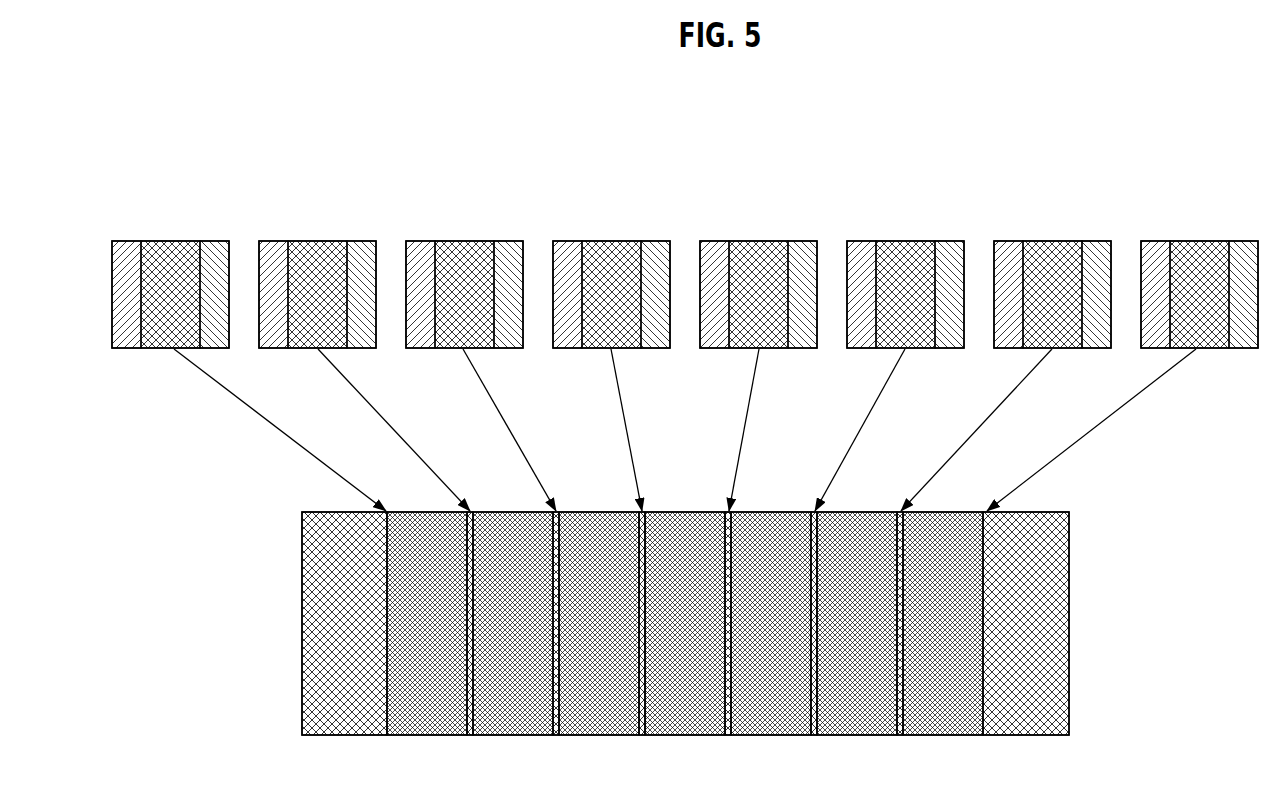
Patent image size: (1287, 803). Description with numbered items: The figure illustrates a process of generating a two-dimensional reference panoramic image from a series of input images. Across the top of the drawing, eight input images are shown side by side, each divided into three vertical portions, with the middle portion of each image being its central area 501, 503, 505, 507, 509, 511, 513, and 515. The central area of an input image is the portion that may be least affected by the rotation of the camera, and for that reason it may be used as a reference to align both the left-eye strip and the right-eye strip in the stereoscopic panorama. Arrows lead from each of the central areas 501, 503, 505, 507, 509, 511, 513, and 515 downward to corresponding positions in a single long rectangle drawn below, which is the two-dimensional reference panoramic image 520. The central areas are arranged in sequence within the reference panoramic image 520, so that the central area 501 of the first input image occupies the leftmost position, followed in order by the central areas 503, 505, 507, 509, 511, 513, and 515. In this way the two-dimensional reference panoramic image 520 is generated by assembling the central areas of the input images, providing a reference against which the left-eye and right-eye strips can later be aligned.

The central area 501 is at (170, 241).
The central area 503 is at (317, 241).
The central area 505 is at (464, 241).
The central area 507 is at (611, 241).
The central area 509 is at (758, 241).
The central area 511 is at (905, 241).
The central area 513 is at (1052, 241).
The central area 515 is at (1199, 241).
The 2D reference panoramic image 520 is at (318, 610).